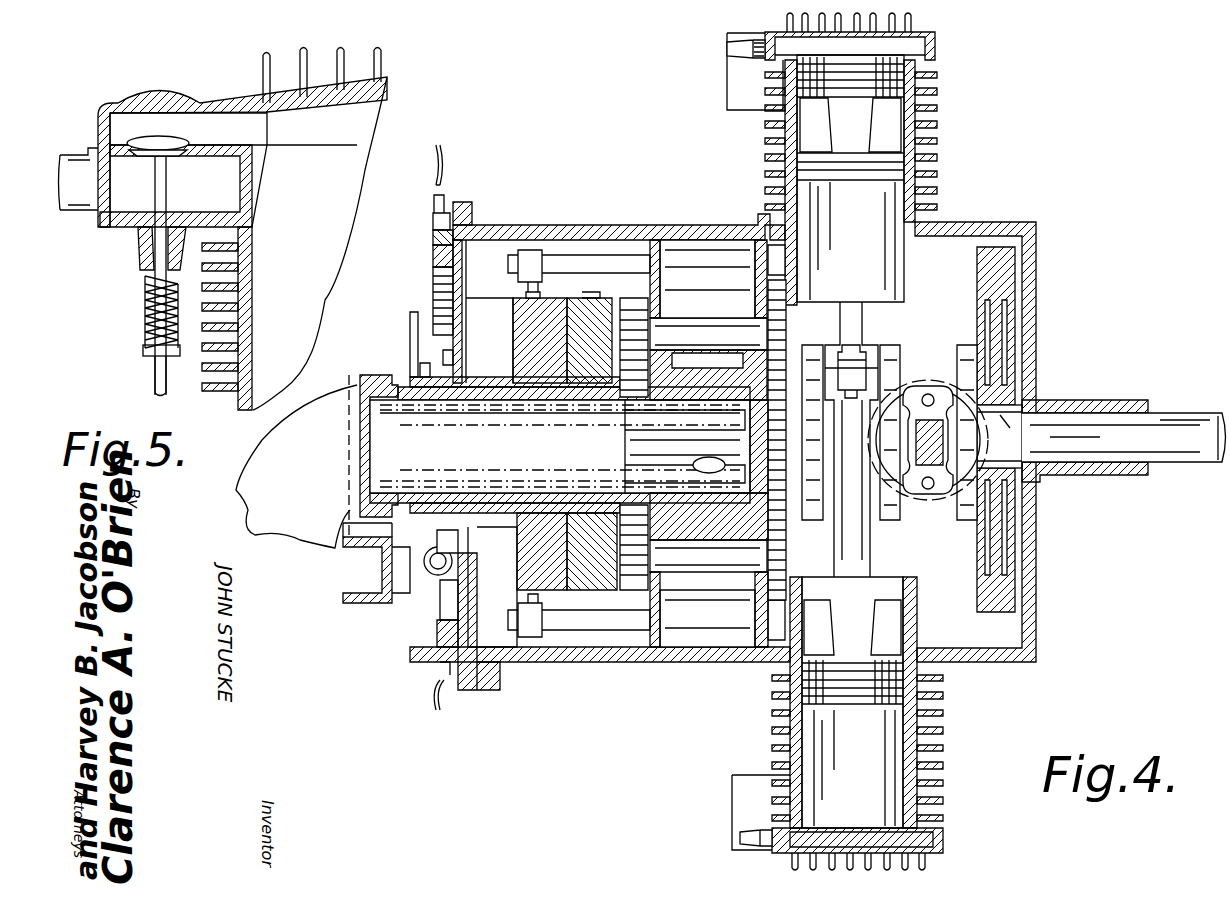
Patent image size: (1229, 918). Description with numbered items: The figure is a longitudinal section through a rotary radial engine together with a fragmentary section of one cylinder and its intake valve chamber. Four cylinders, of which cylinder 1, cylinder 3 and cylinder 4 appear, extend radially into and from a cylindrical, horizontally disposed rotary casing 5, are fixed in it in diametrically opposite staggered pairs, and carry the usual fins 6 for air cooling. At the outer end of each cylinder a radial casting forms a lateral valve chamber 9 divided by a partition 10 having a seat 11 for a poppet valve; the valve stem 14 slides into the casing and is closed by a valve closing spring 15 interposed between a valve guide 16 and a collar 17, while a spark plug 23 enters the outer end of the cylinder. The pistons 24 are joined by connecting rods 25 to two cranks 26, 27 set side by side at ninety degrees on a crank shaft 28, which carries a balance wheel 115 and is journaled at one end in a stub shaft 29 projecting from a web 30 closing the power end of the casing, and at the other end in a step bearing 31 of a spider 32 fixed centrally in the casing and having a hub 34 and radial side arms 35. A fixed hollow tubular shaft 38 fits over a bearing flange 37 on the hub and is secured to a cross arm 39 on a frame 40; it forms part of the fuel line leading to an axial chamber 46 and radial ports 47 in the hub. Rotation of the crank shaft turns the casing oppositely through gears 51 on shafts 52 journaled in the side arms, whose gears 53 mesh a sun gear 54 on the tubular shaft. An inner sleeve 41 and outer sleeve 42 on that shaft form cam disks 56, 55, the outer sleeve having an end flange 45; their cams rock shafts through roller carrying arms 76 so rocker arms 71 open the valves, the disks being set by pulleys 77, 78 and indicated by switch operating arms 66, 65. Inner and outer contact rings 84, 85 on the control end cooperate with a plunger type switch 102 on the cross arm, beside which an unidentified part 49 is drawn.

In FIG. 5, the cylinder 1 is at (345, 196).
In FIG. 4, the cylinder 1 is at (942, 132).
In FIG. 4, the cylinder 3 is at (638, 123).
In FIG. 4, the cylinder 4 is at (890, 745).
In FIG. 4, the casing 5 is at (500, 225).
In FIG. 5, the fins 6 is at (202, 398).
In FIG. 4, the fins 6 is at (937, 170).
In FIG. 5, the valve chamber 9 is at (98, 122).
In FIG. 4, the valve chamber 9 is at (690, 157).
In FIG. 5, the partition 10 is at (218, 145).
In FIG. 4, the partition 10 is at (613, 172).
In FIG. 5, the seat 11 is at (185, 152).
In FIG. 5, the stem 14 is at (155, 386).
In FIG. 5, the valve closing spring 15 is at (145, 314).
In FIG. 5, the valve guide 16 is at (140, 246).
In FIG. 5, the collar 17 is at (143, 351).
In FIG. 4, the spark plug 23 is at (748, 48).
In FIG. 4, the piston 24 is at (890, 104).
In FIG. 4, the connecting rod 25 is at (855, 262).
In FIG. 4, the crank 26 is at (815, 348).
In FIG. 4, the crank 27 is at (942, 495).
In FIG. 4, the crank shaft 28 is at (1030, 398).
In FIG. 4, the stub shaft 29 is at (1108, 404).
In FIG. 4, the web 30 is at (1030, 282).
In FIG. 4, the step bearing 31 is at (757, 470).
In FIG. 4, the spider 32 is at (670, 633).
In FIG. 4, the hub 34 is at (718, 318).
In FIG. 4, the radial side arms 35 is at (650, 240).
In FIG. 4, the bearing flange 37 is at (610, 482).
In FIG. 4, the hollow tubular shaft 38 is at (488, 385).
In FIG. 4, the cross arm 39 is at (370, 375).
In FIG. 4, the frame 40 is at (343, 603).
In FIG. 4, the sleeve 41 is at (490, 505).
In FIG. 4, the sleeve 42 is at (458, 372).
In FIG. 4, the circumferential end flange 45 is at (475, 205).
In FIG. 4, the axial chamber 46 is at (700, 442).
In FIG. 4, the radial ports 47 is at (709, 460).
In FIG. 4, the arm 49 is at (258, 497).
In FIG. 4, the gear 51 is at (790, 554).
In FIG. 4, the shaft 52 is at (708, 445).
In FIG. 4, the gear 53 is at (640, 592).
In FIG. 4, the sun gear 54 is at (620, 407).
In FIG. 4, the cam disk 55 is at (517, 562).
In FIG. 4, the cam disk 56 is at (585, 590).
In FIG. 4, the switch operating arm 65 is at (435, 575).
In FIG. 4, the switch operating arm 66 is at (412, 310).
In FIG. 4, the rocker arm 71 is at (778, 265).
In FIG. 4, the roller carrying arm 76 is at (528, 256).
In FIG. 4, the pulley 77 is at (420, 368).
In FIG. 4, the pulley 78 is at (455, 368).
In FIG. 4, the inner contact carrying ring 84 is at (433, 258).
In FIG. 4, the outer contact carrying ring 85 is at (433, 236).
In FIG. 4, the plunger type switch 102 is at (395, 572).
In FIG. 4, the balance wheel 115 is at (1010, 594).